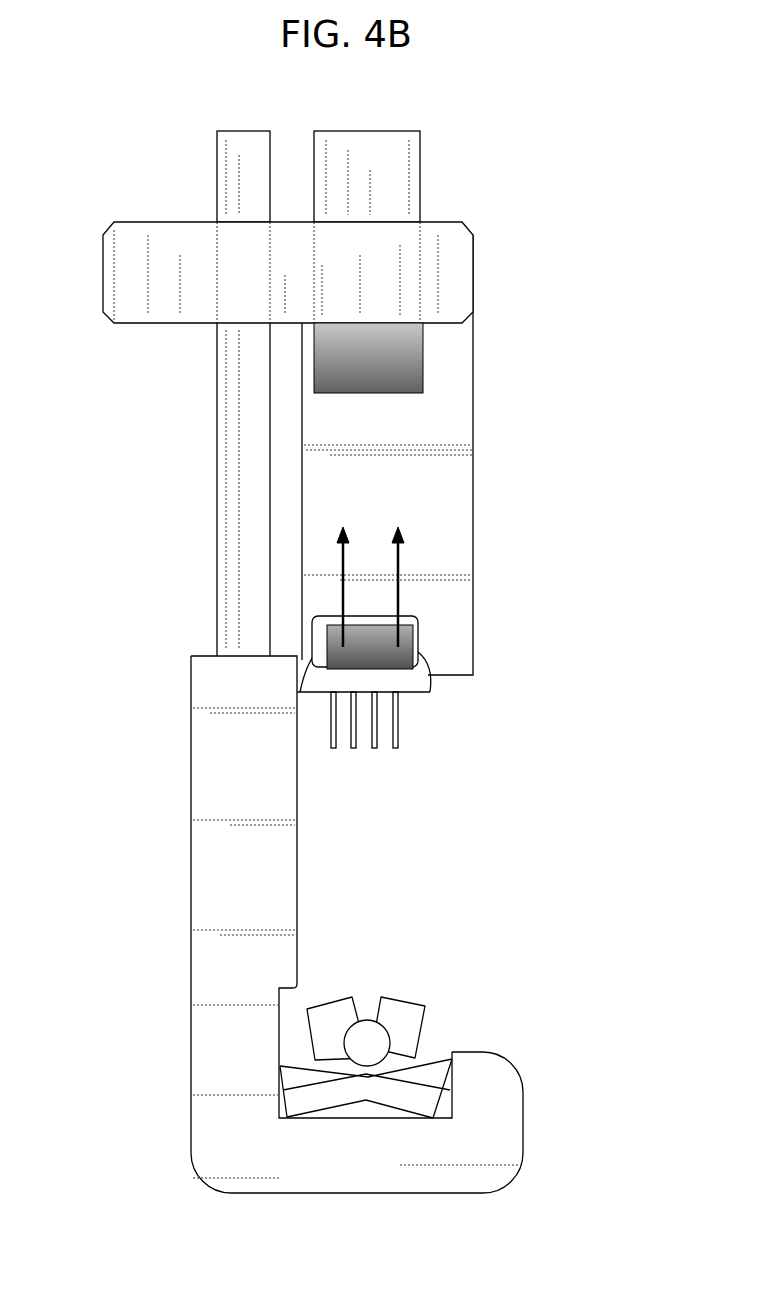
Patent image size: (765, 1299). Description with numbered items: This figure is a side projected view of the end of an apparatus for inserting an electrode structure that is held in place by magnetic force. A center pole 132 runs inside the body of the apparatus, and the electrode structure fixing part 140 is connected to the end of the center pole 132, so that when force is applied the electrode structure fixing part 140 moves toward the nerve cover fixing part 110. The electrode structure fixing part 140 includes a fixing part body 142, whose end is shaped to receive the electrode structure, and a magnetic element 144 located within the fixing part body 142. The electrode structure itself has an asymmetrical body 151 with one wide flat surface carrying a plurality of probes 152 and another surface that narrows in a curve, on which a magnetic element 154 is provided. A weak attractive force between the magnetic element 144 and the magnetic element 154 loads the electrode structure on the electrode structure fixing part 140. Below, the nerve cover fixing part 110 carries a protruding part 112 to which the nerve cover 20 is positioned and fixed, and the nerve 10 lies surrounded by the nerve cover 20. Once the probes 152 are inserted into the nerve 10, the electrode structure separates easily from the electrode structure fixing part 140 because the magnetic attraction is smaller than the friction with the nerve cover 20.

The nerve 10 is at (365, 1028).
The nerve cover 20 is at (413, 1008).
The nerve cover fixing part 110 is at (200, 1122).
The protruding part 112 is at (517, 1112).
The center pole 132 is at (400, 177).
The electrode structure fixing part 140 is at (470, 278).
The fixing part body 142 is at (463, 435).
The magnetic element 144 is at (427, 360).
The body 151 is at (420, 688).
The probes 152 is at (395, 750).
The magnetic element 154 is at (418, 643).